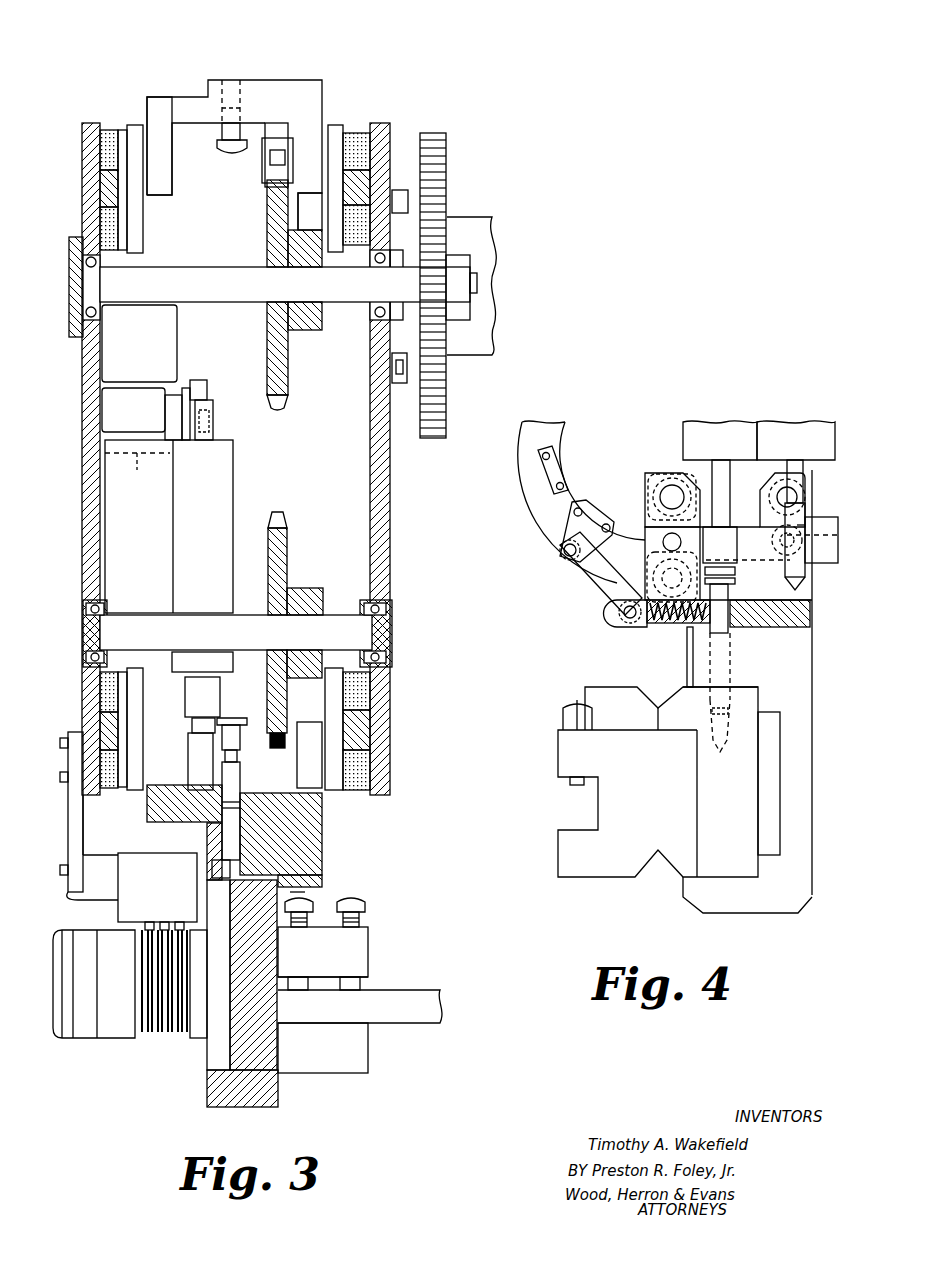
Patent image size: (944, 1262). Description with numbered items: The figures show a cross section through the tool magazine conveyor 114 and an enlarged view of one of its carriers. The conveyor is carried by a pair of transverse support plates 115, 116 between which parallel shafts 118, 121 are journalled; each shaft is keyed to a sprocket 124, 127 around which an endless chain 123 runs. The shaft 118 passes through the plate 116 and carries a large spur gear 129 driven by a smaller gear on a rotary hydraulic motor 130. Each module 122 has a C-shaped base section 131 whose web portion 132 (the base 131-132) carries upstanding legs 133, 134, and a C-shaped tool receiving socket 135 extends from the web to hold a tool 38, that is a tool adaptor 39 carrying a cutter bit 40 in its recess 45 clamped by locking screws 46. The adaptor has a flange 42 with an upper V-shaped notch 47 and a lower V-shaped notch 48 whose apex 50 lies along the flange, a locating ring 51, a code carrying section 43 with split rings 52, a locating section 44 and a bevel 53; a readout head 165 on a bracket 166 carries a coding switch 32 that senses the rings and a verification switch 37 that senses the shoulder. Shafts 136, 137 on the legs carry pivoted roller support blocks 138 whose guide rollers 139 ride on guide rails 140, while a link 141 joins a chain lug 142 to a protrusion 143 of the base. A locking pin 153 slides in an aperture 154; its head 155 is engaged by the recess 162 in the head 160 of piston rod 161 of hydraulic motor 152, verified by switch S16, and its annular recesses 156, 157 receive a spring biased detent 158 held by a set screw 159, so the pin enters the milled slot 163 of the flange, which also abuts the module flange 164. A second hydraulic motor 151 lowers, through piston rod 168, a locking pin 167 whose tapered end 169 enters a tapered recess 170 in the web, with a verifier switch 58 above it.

In FIG. 3, the transverse support plate 115 is at (82, 465).
In FIG. 3, the transverse support plate 116 is at (388, 478).
In FIG. 3, the shaft 118 is at (222, 266).
In FIG. 3, the shaft 121 is at (237, 633).
In FIG. 3, the large spur gear 129 is at (440, 135).
In FIG. 3, the rotary hydraulic motor 130 is at (496, 240).
In FIG. 3, the sprocket 124 is at (288, 362).
In FIG. 3, the sprocket 127 is at (288, 535).
In FIG. 3, the C-shaped base section and web portion 131-132 is at (262, 95).
In FIG. 4, the C-shaped base section 131 is at (805, 610).
In FIG. 4, the web portion 132 is at (805, 620).
In FIG. 3, the module 122 is at (226, 76).
In FIG. 4, the module 122 is at (818, 651).
In FIG. 3, the vertical leg 133 is at (165, 190).
In FIG. 4, the vertical leg 133 is at (825, 552).
In FIG. 3, the vertical leg 134 is at (305, 195).
In FIG. 3, the enlarged head section 155 is at (229, 152).
In FIG. 4, the enlarged head section 155 is at (746, 580).
In FIG. 3, the link 141 is at (275, 130).
In FIG. 4, the link 141 is at (600, 580).
In FIG. 3, the conveyor 114 is at (257, 194).
In FIG. 4, the conveyor 114 is at (550, 511).
In FIG. 3, the endless chain 123 is at (332, 125).
In FIG. 4, the endless chain 123 is at (555, 470).
In FIG. 3, the roller support block 138 is at (133, 125).
In FIG. 4, the roller support block 138 is at (650, 473).
In FIG. 3, the guide roller 139 is at (105, 145).
In FIG. 4, the guide roller 139 is at (660, 497).
In FIG. 3, the guide rail 140 is at (100, 188).
In FIG. 4, the guide rail 140 is at (825, 520).
In FIG. 3, the switch S16 is at (157, 372).
In FIG. 3, the hydraulic motor 152 is at (189, 526).
In FIG. 4, the hydraulic motor 152 is at (718, 425).
In FIG. 3, the lead 58 is at (137, 473).
In FIG. 3, the piston rod 161 is at (202, 662).
In FIG. 4, the piston rod 161 is at (720, 475).
In FIG. 3, the horizontal recess 162 is at (185, 716).
In FIG. 3, the enlarged head 160 is at (208, 692).
In FIG. 4, the enlarged head 160 is at (730, 525).
In FIG. 3, the module locating and locking pin 167 is at (192, 757).
In FIG. 4, the module locating and locking pin 167 is at (787, 536).
In FIG. 3, the annular recess 157 is at (237, 757).
In FIG. 3, the locking pin 153 is at (240, 785).
In FIG. 4, the locking pin 153 is at (732, 664).
In FIG. 3, the annular recess 156 is at (210, 826).
In FIG. 3, the aperture 154 is at (212, 868).
In FIG. 3, the milled slot 163 is at (232, 894).
In FIG. 4, the milled slot 163 is at (733, 732).
In FIG. 3, the central flange section 42 is at (258, 1080).
In FIG. 4, the central flange section 42 is at (748, 848).
In FIG. 3, the tool receiving socket 135 is at (322, 878).
In FIG. 4, the tool receiving socket 135 is at (760, 692).
In FIG. 3, the flange 164 is at (310, 892).
In FIG. 3, the locking screw 46 is at (366, 905).
In FIG. 4, the locking screw 46 is at (592, 710).
In FIG. 3, the tool adaptor 39 is at (282, 958).
In FIG. 4, the tool adaptor 39 is at (669, 782).
In FIG. 3, the cutter bit 40 is at (442, 995).
In FIG. 3, the tool 38 is at (375, 1053).
In FIG. 4, the tool 38 is at (601, 885).
In FIG. 3, the readout head 165 is at (88, 914).
In FIG. 3, the bracket 166 is at (75, 808).
In FIG. 3, the switch S32 32 is at (44, 879).
In FIG. 3, the switch S37 37 is at (74, 894).
In FIG. 3, the adaptor locating section 44 is at (80, 1038).
In FIG. 3, the bevel 53 is at (58, 1038).
In FIG. 3, the split ring 52 is at (162, 1032).
In FIG. 3, the locating ring 51 is at (197, 1038).
In FIG. 3, the code carrying section 43 is at (122, 1080).
In FIG. 4, the hydraulic motor 151 is at (800, 425).
In FIG. 4, the piston rod 168 is at (797, 465).
In FIG. 4, the shaft 136 is at (663, 543).
In FIG. 4, the tapered lower end 169 is at (792, 564).
In FIG. 4, the shaft 137 is at (835, 525).
In FIG. 4, the tapered recess 170 is at (812, 600).
In FIG. 4, the spring biased detent 158 is at (675, 625).
In FIG. 4, the protrusion 143 is at (618, 628).
In FIG. 4, the lug 142 is at (562, 560).
In FIG. 4, the set screw 159 is at (682, 657).
In FIG. 4, the V-shaped notch 47 is at (652, 670).
In FIG. 4, the notch tip 50 is at (658, 716).
In FIG. 4, the longitudinal recess 45 is at (567, 816).
In FIG. 4, the V-shaped notch 48 is at (669, 878).